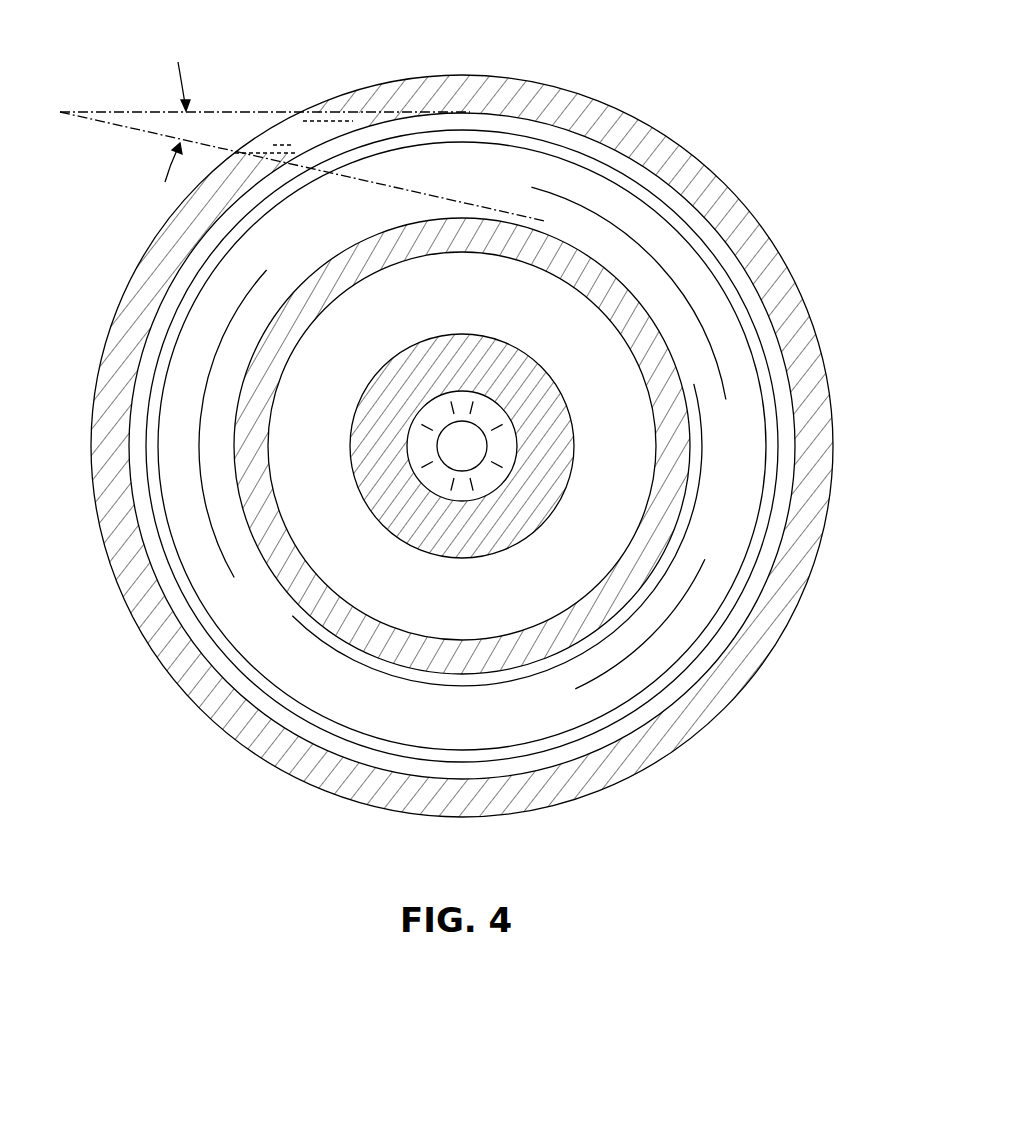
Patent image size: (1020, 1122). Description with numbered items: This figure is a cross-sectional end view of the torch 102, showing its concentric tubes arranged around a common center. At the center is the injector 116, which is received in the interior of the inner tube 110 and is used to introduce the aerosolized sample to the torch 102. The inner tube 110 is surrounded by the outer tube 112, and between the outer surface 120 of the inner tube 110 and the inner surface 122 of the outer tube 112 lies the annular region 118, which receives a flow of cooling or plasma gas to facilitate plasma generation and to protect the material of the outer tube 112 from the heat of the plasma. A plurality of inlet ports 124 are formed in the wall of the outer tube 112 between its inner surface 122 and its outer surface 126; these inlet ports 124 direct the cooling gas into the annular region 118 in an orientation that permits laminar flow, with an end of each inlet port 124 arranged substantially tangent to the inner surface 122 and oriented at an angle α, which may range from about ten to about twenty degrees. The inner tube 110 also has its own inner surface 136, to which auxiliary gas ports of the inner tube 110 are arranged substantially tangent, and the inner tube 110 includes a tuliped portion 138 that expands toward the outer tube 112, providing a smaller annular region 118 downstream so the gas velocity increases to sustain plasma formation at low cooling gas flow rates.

The torch 102 is at (800, 70).
The inner tube 110 is at (310, 585).
The outer tube 112 is at (635, 757).
The injector 116 is at (388, 418).
The annular region 118 is at (632, 208).
The outer surface of the inner tube 120 is at (620, 287).
The inner surface of the outer tube 122 is at (474, 111).
The inlet ports 124 is at (273, 140).
The outer surface of the outer tube 126 is at (143, 263).
The inner surface of the inner tube 136 is at (618, 567).
The tuliped portion 138 is at (727, 325).